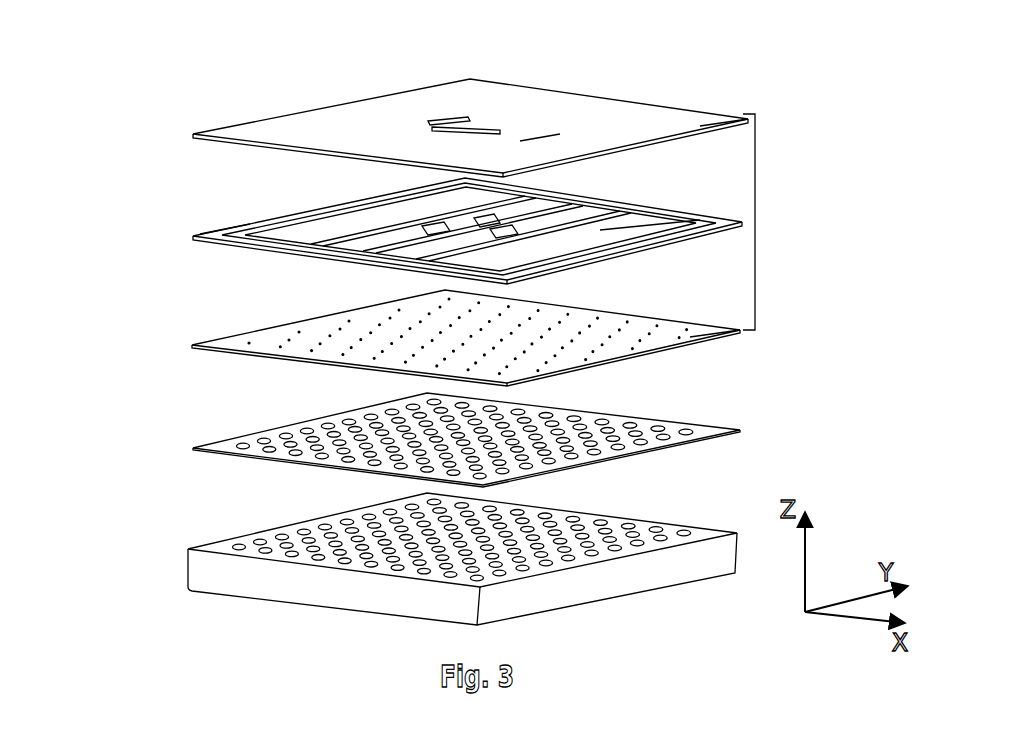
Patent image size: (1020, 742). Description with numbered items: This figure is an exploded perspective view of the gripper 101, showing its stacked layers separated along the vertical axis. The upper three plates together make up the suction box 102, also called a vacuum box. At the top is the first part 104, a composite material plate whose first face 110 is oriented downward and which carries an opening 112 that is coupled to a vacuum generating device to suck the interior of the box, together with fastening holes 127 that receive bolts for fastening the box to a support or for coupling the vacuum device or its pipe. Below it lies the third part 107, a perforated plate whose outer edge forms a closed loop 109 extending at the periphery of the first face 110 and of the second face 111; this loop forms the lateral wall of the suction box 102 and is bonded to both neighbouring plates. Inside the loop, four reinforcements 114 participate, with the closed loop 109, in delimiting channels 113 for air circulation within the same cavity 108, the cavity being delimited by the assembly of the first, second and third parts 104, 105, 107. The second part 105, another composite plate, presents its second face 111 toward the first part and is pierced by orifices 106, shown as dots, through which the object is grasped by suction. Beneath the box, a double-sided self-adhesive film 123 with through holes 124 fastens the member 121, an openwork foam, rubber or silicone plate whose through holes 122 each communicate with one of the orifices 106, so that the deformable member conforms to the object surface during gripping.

The gripper 101 is at (210, 70).
The suction box 102 is at (755, 223).
The first part 104 is at (213, 133).
The second part 105 is at (205, 343).
The orifices 106 is at (332, 343).
The third part 107 is at (185, 240).
The cavity 108 is at (627, 232).
The closed loop 109 is at (212, 233).
The first face 110 is at (703, 133).
The second face 111 is at (697, 320).
The opening 112 is at (520, 138).
The channels 113 is at (530, 215).
The reinforcements 114 is at (477, 248).
The member 121 is at (198, 565).
The through holes 122 is at (242, 545).
The double-sided self-adhesive film 123 is at (198, 447).
The through holes 124 is at (243, 445).
The fastening holes 127 is at (500, 128).